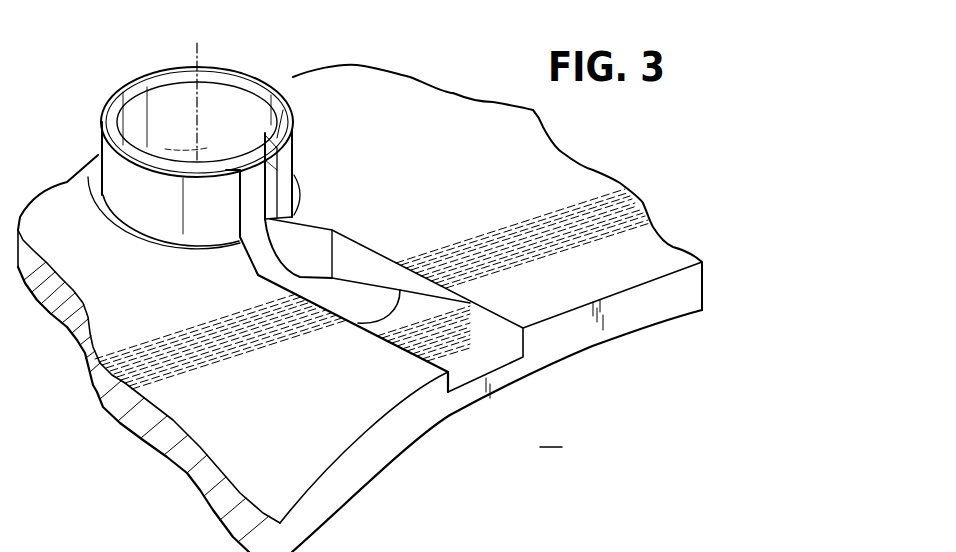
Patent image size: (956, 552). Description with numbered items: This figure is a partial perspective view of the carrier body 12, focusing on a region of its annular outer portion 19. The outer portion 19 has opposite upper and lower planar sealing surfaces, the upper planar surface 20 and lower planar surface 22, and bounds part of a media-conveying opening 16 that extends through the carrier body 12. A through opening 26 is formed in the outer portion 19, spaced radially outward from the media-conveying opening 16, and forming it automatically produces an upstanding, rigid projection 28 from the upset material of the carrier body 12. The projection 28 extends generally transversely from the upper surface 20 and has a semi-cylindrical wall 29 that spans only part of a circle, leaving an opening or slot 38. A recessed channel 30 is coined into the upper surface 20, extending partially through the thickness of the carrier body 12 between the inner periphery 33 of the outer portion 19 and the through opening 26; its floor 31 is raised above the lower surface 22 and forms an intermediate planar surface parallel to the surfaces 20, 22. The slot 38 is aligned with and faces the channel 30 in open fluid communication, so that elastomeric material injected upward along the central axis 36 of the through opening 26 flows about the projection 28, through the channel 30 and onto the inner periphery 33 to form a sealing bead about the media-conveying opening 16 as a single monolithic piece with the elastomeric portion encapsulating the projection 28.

The carrier body 12 is at (103, 388).
The media-conveying opening 16 is at (360, 308).
The outer portion 19 is at (453, 110).
The upper planar surface 20 is at (582, 182).
The lower planar surface 22 is at (120, 425).
The through opening 26 is at (277, 221).
The projection 28 is at (277, 102).
The semi-cylindrical wall 29 is at (273, 170).
The recessed channel 30 is at (420, 307).
The floor 31 is at (476, 350).
The inner periphery 33 is at (394, 437).
The central axis 36 is at (196, 52).
The slot 38 is at (266, 133).